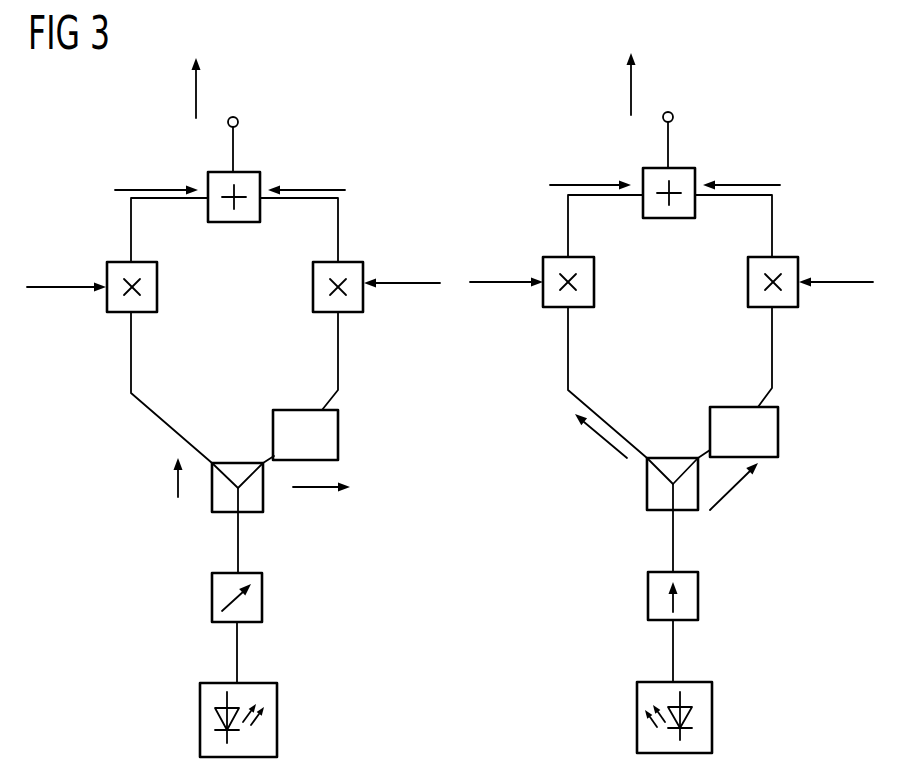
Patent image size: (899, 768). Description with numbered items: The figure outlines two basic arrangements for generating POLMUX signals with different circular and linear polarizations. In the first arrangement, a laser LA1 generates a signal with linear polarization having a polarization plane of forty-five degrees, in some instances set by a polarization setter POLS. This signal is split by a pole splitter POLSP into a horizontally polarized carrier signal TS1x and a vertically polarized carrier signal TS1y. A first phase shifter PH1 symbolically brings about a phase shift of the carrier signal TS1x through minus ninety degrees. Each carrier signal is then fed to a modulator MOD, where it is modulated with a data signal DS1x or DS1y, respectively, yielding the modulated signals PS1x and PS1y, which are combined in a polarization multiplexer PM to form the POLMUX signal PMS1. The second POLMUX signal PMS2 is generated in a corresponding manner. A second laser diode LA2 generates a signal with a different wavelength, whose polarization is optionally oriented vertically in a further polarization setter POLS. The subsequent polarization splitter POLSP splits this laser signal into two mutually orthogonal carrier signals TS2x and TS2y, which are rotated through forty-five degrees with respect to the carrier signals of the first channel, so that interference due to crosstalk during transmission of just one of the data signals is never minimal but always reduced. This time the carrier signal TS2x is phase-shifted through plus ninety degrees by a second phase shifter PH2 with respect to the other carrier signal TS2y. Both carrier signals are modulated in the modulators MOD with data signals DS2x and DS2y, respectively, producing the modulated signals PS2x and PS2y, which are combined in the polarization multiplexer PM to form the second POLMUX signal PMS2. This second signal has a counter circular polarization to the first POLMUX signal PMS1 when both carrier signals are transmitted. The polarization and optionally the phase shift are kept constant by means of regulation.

The POLMUX signal PMS1 is at (226, 88).
The second POLMUX signal PMS2 is at (664, 84).
The polarization multiplexer PM is at (234, 222).
The modulator MOD is at (313, 287).
The modulated carrier signal PS1y is at (156, 175).
The modulated carrier signal PS1x is at (306, 175).
The modulated carrier signal PS2y is at (590, 170).
The modulated carrier signal PS2x is at (741, 170).
The data signal DS1y is at (66, 273).
The data signal DS1x is at (402, 271).
The data signal DS2y is at (506, 267).
The data signal DS2x is at (836, 267).
The polarization splitter POLSP is at (236, 462).
The first phase shifter PH1 is at (338, 435).
The second phase shifter PH2 is at (735, 405).
The vertically polarized carrier signal TS1y is at (151, 480).
The horizontally polarized carrier signal TS1x is at (321, 503).
The carrier signal TS2y is at (593, 444).
The carrier signal TS2x is at (749, 490).
The polarization setter POLS is at (262, 597).
The laser LA1 is at (277, 718).
The second laser diode LA2 is at (712, 718).